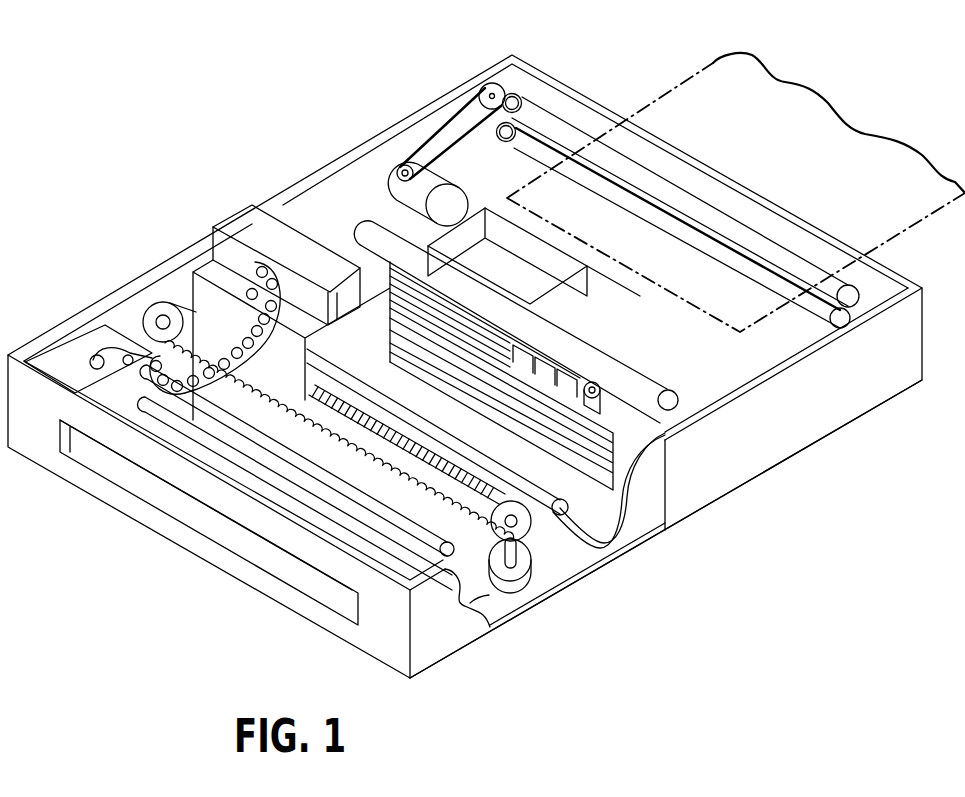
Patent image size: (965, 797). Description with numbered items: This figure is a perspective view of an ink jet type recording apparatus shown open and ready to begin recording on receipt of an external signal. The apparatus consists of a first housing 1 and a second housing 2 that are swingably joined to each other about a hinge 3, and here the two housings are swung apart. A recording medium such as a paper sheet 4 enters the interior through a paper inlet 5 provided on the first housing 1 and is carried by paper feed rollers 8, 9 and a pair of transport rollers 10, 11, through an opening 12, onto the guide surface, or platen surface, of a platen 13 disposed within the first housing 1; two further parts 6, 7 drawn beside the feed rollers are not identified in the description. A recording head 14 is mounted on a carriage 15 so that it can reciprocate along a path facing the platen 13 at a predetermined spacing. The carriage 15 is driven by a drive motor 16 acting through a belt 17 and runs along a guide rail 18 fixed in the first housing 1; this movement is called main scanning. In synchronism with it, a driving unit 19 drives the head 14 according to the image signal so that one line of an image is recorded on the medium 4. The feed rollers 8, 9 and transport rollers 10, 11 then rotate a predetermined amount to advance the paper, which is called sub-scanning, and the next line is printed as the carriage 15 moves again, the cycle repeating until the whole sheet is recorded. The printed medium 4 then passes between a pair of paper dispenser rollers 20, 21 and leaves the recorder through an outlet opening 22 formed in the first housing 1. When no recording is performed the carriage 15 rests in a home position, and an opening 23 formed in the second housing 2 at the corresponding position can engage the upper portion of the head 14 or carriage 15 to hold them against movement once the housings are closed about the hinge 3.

The first housing 1 is at (433, 633).
The second housing 2 is at (820, 402).
The hinge 3 is at (573, 380).
The paper sheet 4 is at (712, 62).
The platen roller 5 is at (758, 217).
The pulley 6 is at (403, 187).
The drive belt 7 is at (423, 142).
The paper feed roller 8 is at (567, 140).
The paper feed roller 9 is at (527, 140).
The transport roller 10 is at (383, 238).
The transport roller 11 is at (350, 238).
The opening 12 is at (585, 427).
The platen 13 is at (605, 527).
The recording head 14 is at (287, 215).
The carriage 15 is at (270, 280).
The drive motor 16 is at (533, 588).
The belt 17 is at (583, 527).
The guide rail 18 is at (553, 496).
The driving unit 19 is at (67, 363).
The paper dispenser roller 20 is at (240, 432).
The paper dispenser roller 21 is at (300, 496).
The outlet opening 22 is at (307, 573).
The opening 23 is at (545, 258).